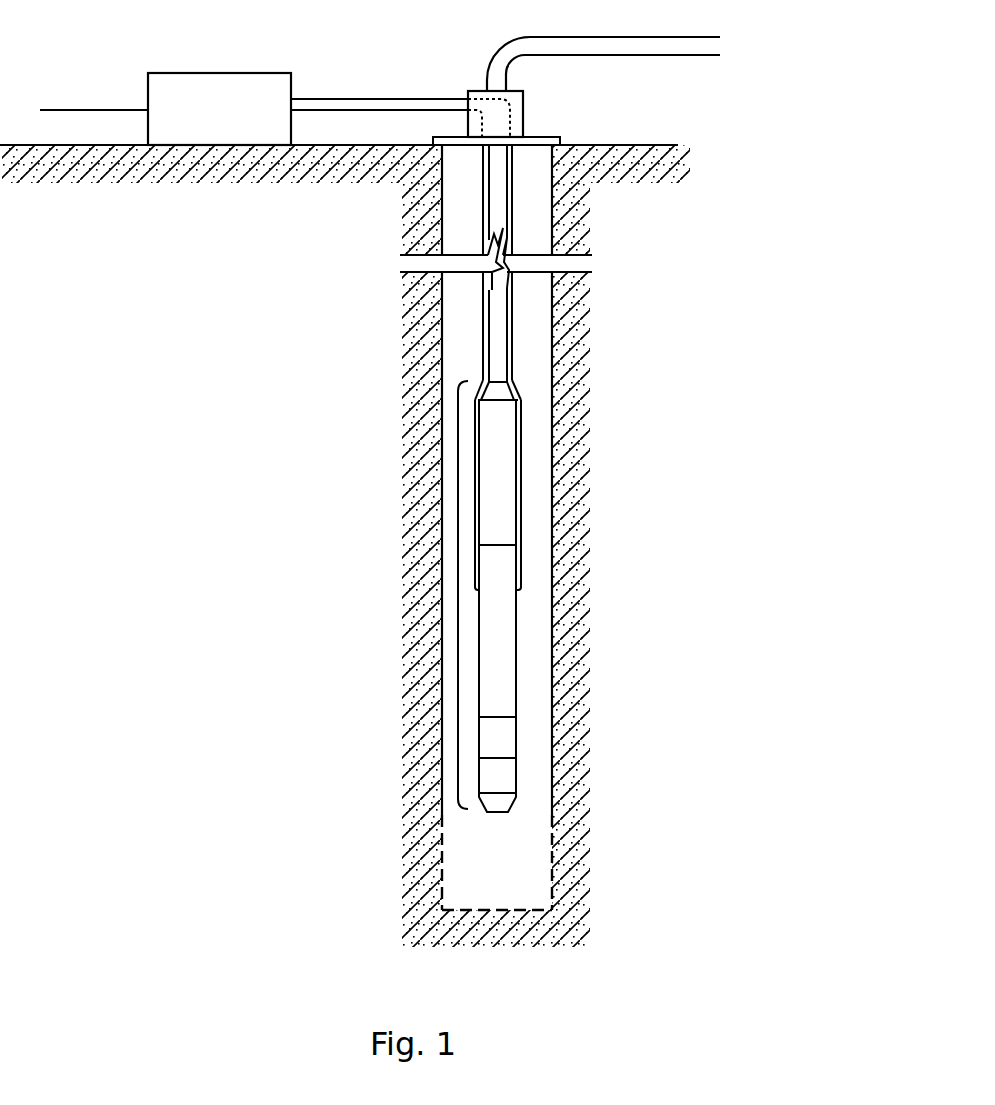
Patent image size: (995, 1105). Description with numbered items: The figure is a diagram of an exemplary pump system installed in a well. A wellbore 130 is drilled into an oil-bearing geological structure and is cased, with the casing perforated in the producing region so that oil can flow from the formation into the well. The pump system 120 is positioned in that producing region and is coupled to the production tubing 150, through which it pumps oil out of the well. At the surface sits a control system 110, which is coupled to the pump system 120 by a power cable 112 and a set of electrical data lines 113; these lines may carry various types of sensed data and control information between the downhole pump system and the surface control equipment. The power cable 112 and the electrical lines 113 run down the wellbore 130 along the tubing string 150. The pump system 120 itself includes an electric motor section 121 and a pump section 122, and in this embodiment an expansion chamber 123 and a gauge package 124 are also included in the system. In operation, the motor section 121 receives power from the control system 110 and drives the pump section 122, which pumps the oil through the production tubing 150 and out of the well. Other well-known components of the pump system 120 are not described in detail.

The control system 110 is at (220, 73).
The power cable 112 is at (377, 108).
The electrical data lines 113 is at (424, 98).
The pump system 120 is at (504, 591).
The electric motor section 121 is at (515, 633).
The pump section 122 is at (515, 420).
The expansion chamber 123 is at (515, 741).
The gauge package 124 is at (515, 783).
The wellbore 130 is at (549, 498).
The production tubing 150 is at (507, 335).